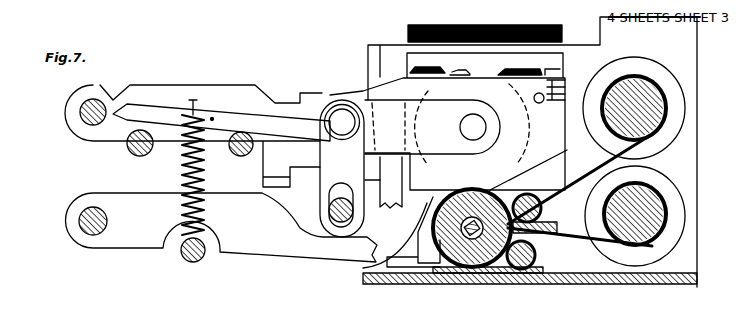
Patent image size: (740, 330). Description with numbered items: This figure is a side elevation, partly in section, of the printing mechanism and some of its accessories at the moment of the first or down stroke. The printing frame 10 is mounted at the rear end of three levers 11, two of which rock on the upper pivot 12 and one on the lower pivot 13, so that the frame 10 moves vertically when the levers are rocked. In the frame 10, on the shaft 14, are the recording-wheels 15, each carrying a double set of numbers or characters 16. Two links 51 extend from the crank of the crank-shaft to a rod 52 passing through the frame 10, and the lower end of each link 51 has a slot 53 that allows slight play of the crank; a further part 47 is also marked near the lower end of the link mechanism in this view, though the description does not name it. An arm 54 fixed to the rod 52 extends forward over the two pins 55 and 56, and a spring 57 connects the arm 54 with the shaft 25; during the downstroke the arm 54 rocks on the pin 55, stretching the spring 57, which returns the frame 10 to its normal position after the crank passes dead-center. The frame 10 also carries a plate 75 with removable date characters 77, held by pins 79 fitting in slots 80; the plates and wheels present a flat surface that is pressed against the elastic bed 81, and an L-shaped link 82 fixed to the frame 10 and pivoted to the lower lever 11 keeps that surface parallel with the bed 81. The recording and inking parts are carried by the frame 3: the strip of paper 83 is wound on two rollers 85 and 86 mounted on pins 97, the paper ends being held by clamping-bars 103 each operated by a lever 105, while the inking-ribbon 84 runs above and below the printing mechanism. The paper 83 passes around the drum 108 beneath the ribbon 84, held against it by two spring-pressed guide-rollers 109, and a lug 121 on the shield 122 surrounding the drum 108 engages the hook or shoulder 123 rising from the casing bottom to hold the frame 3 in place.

The frame 3 is at (693, 162).
The frame 10 is at (563, 138).
The levers 11 is at (112, 139).
The upper pivot 12 is at (79, 110).
The lower pivot 13 is at (79, 221).
The shaft 14 is at (474, 128).
The recording-wheels 15 is at (473, 75).
The numbers or characters 16 is at (440, 66).
The shaft 25 is at (177, 255).
The lever end 47 is at (339, 228).
The links 51 is at (196, 101).
The rod 52 is at (344, 130).
The slot 53 is at (330, 200).
The arm or lever 54 is at (221, 119).
The pin 55 is at (241, 153).
The pin 56 is at (140, 152).
The spring 57 is at (197, 196).
The plate 75 is at (520, 65).
The date characters 77 is at (551, 67).
The pins 79 is at (540, 103).
The slots 80 is at (565, 99).
The elastic bed 81 is at (485, 26).
The L-shaped link 82 is at (383, 203).
The strip of paper 83 is at (571, 185).
The inking-ribbon 84 is at (512, 53).
The roller 85 is at (655, 146).
The roller 86 is at (658, 200).
The pins 97 is at (605, 110).
The clamping-bars 103 is at (626, 84).
The lever 105 is at (632, 186).
The drum or roller 108 is at (468, 281).
The guide-rollers 109 is at (534, 258).
The lug 121 is at (414, 274).
The shield 122 is at (441, 272).
The hook or shoulder 123 is at (364, 267).